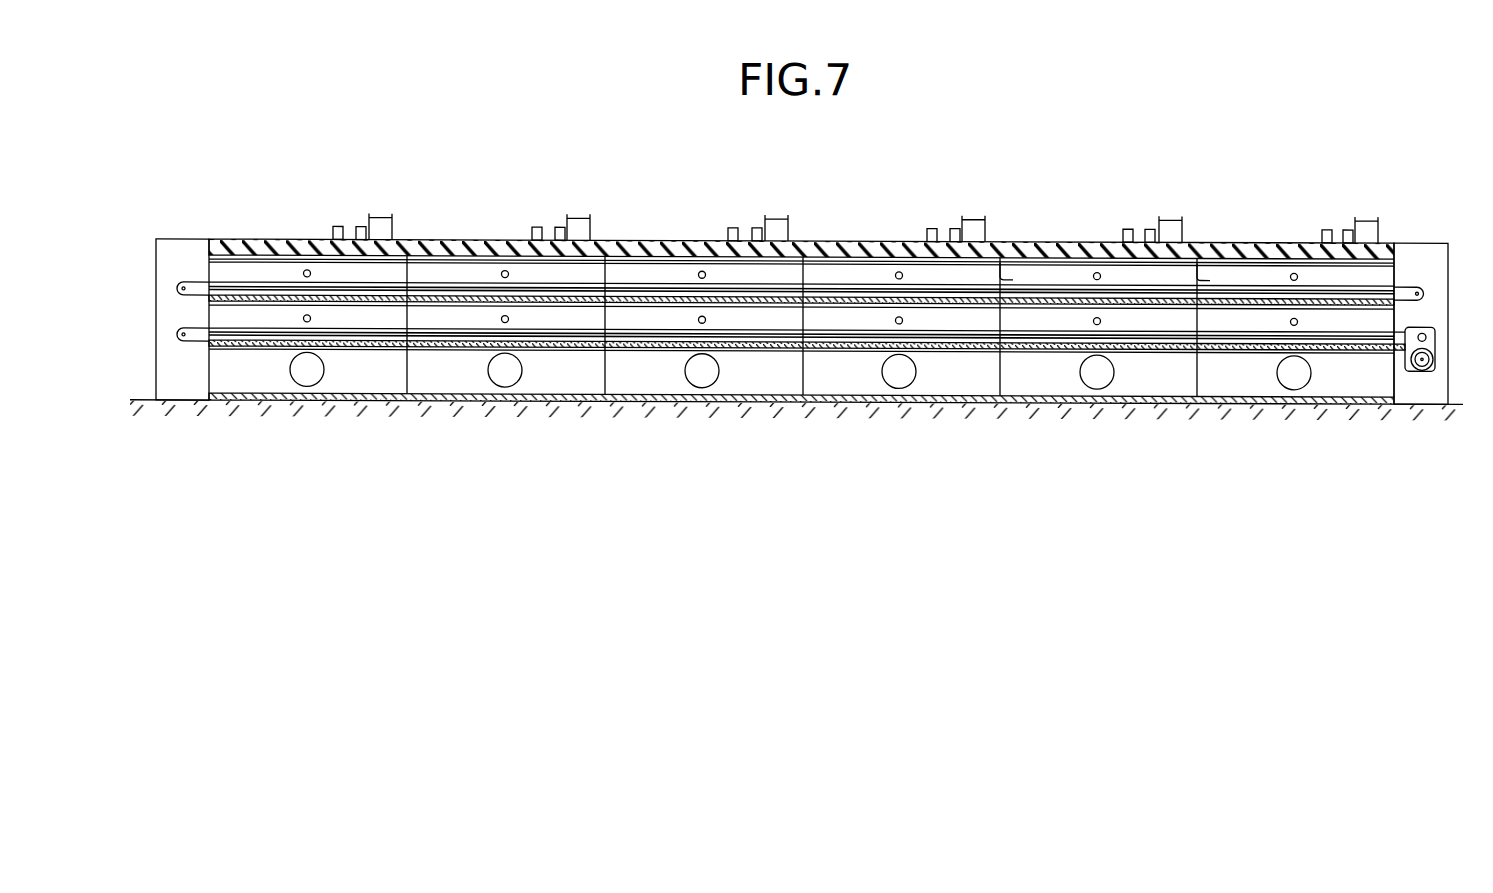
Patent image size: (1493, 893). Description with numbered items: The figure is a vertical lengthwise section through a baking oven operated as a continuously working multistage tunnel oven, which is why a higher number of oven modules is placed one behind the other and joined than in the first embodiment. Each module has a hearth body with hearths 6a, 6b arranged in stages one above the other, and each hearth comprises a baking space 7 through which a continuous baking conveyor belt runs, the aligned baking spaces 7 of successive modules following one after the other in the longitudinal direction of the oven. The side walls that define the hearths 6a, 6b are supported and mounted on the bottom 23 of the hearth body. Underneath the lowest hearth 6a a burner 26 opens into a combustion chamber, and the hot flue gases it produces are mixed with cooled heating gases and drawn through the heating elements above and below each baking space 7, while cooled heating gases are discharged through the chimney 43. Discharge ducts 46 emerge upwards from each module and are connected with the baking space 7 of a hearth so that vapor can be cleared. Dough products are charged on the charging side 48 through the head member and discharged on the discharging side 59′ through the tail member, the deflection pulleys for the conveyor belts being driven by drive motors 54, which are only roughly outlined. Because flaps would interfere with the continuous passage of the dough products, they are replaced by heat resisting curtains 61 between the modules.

The charging side 48 is at (193, 462).
The discharging side 59′ is at (1433, 464).
The chimney 43 is at (380, 226).
The discharge ducts 46 is at (560, 226).
The hearth 6a is at (778, 326).
The hearth 6b is at (648, 280).
The heat resisting curtain 61 is at (1013, 273).
The drive motor 54 is at (1435, 345).
The burner 26 is at (504, 373).
The bottom 23 is at (657, 397).
The baking space 7 is at (960, 274).